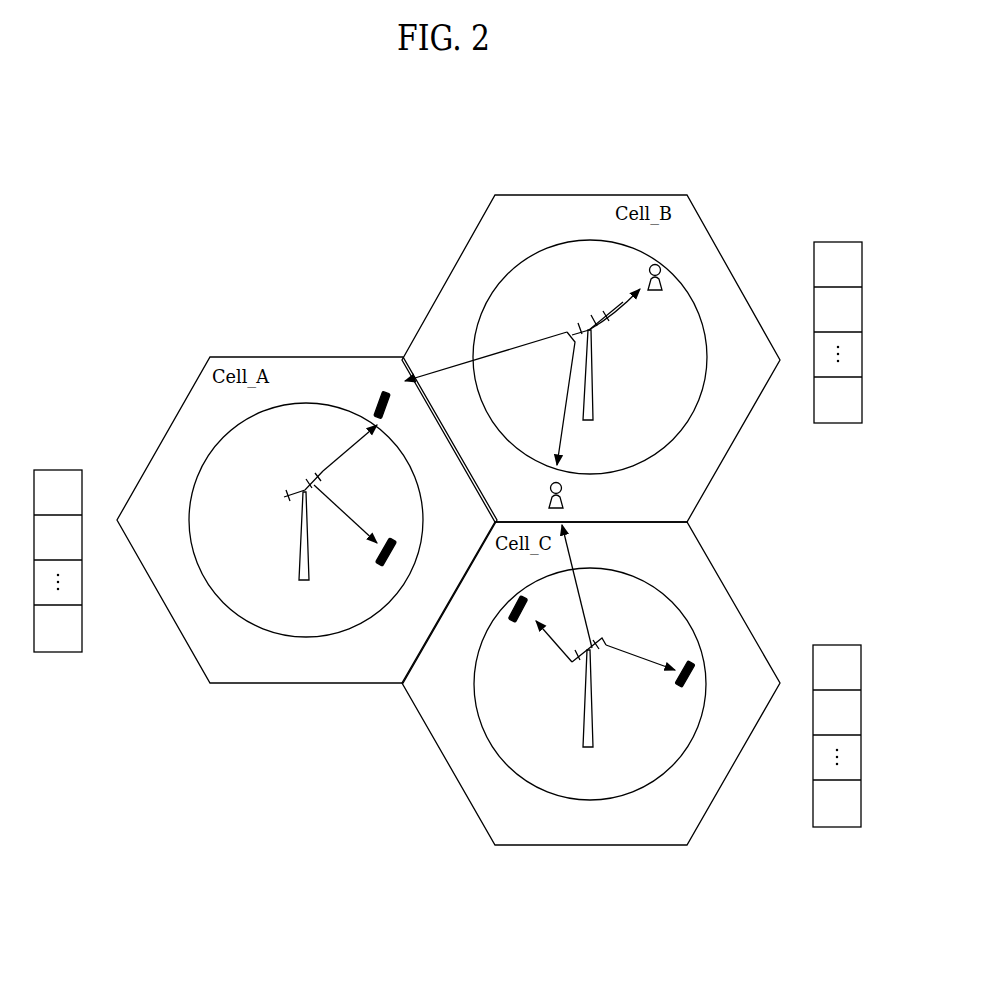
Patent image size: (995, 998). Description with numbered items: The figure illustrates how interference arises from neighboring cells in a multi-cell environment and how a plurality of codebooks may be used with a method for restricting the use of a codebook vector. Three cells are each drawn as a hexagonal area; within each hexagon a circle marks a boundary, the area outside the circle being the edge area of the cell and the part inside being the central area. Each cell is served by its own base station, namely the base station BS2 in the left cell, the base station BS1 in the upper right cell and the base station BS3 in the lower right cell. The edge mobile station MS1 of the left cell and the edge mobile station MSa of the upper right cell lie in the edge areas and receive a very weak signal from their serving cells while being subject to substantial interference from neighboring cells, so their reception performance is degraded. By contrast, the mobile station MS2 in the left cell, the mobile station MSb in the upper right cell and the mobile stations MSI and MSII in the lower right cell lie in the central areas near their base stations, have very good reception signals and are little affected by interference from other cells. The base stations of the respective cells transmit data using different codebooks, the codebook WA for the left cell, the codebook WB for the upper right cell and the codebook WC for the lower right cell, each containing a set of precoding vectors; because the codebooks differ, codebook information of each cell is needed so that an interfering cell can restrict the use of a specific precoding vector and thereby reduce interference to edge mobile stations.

The base station BS1 is at (522, 377).
The base station BS2 is at (330, 519).
The base station BS3 is at (605, 651).
The edge mobile station MS1 is at (406, 414).
The mobile station MS2 is at (381, 566).
The edge mobile station MSa is at (586, 498).
The mobile station MSb is at (668, 294).
The mobile station MSI is at (686, 688).
The mobile station MSII is at (518, 624).
The codebook WA is at (58, 544).
The codebook WB is at (838, 315).
The codebook WC is at (837, 718).